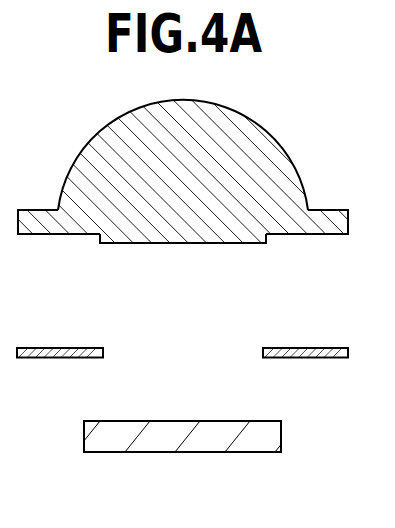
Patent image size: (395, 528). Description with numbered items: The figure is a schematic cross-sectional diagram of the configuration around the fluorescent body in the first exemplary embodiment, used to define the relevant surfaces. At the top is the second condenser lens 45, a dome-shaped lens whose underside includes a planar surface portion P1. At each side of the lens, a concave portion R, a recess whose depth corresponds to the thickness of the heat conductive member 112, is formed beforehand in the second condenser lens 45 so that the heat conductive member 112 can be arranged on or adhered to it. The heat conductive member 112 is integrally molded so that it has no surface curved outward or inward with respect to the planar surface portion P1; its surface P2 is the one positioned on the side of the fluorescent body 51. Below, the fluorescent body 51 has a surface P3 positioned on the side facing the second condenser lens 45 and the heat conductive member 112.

The second condenser lens 45 is at (272, 143).
The concave portion R is at (55, 234).
The planar surface portion P1 is at (182, 189).
The surface of the heat conductive member P2 is at (185, 357).
The heat conductive member 112 is at (322, 352).
The surface of the fluorescent body P3 is at (187, 434).
The fluorescent body 51 is at (200, 452).